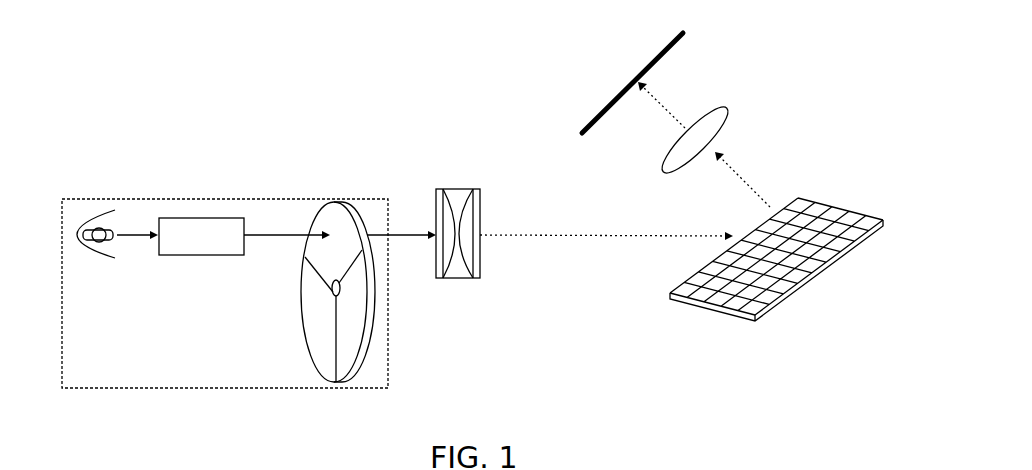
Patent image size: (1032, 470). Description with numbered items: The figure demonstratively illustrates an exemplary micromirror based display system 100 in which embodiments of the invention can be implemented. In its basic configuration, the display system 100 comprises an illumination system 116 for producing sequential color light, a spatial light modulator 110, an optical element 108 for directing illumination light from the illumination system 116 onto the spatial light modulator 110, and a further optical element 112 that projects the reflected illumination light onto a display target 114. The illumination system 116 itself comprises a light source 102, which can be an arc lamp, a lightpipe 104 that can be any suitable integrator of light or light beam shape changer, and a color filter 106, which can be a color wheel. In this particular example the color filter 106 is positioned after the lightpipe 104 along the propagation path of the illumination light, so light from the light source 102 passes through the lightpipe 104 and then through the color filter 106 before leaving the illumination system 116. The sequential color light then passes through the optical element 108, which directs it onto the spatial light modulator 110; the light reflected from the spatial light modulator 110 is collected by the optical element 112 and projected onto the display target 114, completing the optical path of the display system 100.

The display system 100 is at (344, 104).
The light source 102 is at (90, 202).
The lightpipe 104 is at (203, 217).
The color filter 106 is at (343, 203).
The optical element 108 is at (458, 183).
The spatial light modulator 110 is at (812, 193).
The optical element 112 is at (723, 107).
The display target 114 is at (652, 31).
The illumination system 116 is at (223, 390).